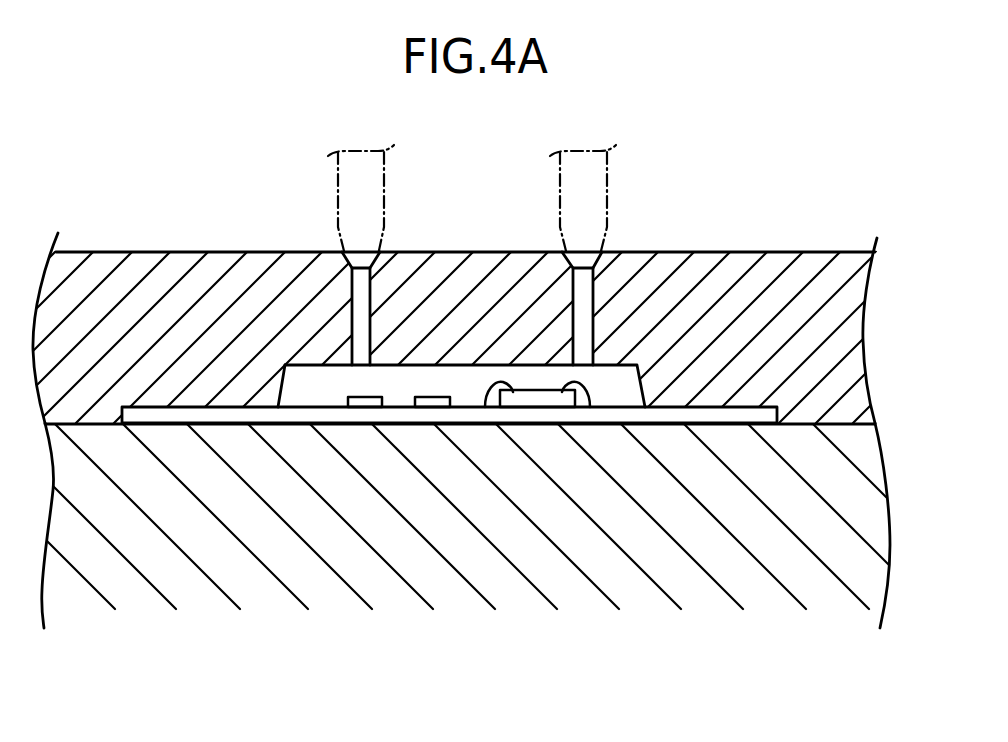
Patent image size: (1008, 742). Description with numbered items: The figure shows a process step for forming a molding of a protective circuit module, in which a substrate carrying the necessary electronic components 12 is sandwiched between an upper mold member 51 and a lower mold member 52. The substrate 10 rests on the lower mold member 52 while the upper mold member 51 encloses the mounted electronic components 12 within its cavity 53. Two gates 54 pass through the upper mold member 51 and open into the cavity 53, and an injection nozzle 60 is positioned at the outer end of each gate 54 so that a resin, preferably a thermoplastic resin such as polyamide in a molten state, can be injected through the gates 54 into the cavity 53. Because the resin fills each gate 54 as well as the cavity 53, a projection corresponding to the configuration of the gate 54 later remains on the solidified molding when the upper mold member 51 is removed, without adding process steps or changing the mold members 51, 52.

The circuit board 10 is at (717, 415).
The electronic components 12 is at (538, 400).
The upper mold member 51 is at (740, 252).
The lower mold member 52 is at (350, 563).
The cavity 53 is at (333, 367).
The gate 54 is at (364, 293).
The injection nozzle 60 is at (338, 198).